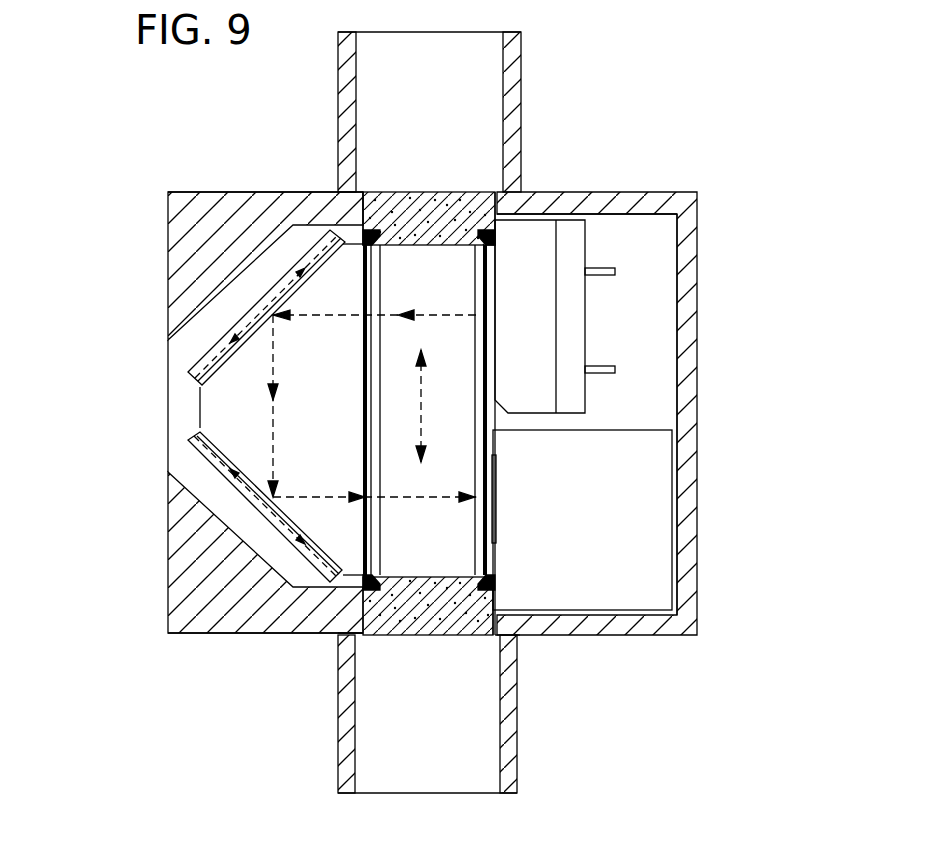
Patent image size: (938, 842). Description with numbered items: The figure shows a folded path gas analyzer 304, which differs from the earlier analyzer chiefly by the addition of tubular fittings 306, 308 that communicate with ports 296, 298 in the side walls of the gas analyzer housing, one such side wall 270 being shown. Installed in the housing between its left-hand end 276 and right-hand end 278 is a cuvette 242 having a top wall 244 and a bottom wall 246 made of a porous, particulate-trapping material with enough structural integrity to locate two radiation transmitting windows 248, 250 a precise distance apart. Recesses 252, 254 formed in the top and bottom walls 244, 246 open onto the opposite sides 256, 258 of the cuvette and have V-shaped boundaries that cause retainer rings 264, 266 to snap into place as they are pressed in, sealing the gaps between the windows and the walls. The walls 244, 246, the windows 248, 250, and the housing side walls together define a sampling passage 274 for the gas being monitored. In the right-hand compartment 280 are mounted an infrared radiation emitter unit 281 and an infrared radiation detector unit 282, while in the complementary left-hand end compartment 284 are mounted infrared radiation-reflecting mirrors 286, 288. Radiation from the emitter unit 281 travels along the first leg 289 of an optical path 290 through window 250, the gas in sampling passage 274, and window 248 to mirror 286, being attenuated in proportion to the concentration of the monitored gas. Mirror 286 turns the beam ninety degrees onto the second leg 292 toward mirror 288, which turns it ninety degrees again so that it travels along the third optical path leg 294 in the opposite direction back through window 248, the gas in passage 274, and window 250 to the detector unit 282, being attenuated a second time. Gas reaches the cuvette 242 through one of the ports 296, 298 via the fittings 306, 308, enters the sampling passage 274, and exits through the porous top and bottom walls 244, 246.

The folded path gas analyzer 304 is at (152, 180).
The cuvette 242 is at (350, 195).
The top wall 244 is at (452, 192).
The bottom wall 246 is at (376, 636).
The radiation transmitting window 248 is at (365, 380).
The radiation transmitting window 250 is at (493, 442).
The recess 252 is at (497, 250).
The recess 254 is at (493, 582).
The side of the cuvette 256 is at (350, 617).
The side of the cuvette 258 is at (500, 615).
The retainer ring 264 is at (366, 402).
The retainer ring 266 is at (500, 384).
The side wall 270 is at (660, 254).
The sampling passage 274 is at (452, 561).
The left-hand end 276 is at (168, 260).
The right-hand end 278 is at (697, 285).
The right-hand compartment 280 is at (652, 421).
The infrared radiation emitter unit 281 is at (585, 332).
The infrared radiation detector unit 282 is at (690, 520).
The left-hand end compartment 284 is at (242, 506).
The infrared radiation-reflecting mirror 286 is at (200, 365).
The infrared radiation-reflecting mirror 288 is at (190, 458).
The first leg 289 is at (452, 316).
The optical path 290 is at (243, 410).
The second leg 292 is at (273, 453).
The third optical path leg 294 is at (497, 498).
The port 296 is at (498, 230).
The port 298 is at (477, 638).
The tubular fitting 306 is at (525, 70).
The tubular fitting 308 is at (518, 710).